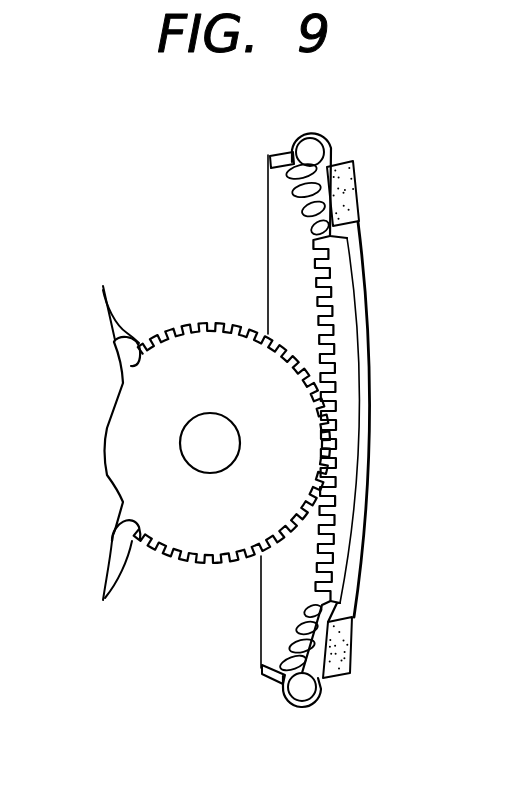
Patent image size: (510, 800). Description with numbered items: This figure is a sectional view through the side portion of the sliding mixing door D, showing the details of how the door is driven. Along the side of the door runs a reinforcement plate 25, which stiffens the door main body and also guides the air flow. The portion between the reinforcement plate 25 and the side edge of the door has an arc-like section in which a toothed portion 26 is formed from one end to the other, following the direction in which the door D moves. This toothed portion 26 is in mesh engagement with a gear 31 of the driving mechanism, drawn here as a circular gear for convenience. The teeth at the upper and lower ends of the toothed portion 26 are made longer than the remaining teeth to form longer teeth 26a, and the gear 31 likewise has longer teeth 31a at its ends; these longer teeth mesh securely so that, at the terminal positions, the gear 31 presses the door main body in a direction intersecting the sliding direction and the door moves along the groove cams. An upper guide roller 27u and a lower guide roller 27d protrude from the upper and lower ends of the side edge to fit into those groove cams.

The reinforcement plate 25 is at (268, 258).
The toothed portion 26 is at (332, 293).
The longer teeth 26a is at (303, 213).
The upper guide roller 27u is at (333, 146).
The lower guide roller 27d is at (322, 689).
The gear 31 is at (105, 450).
The longer teeth 31a is at (101, 604).
The door D is at (373, 452).